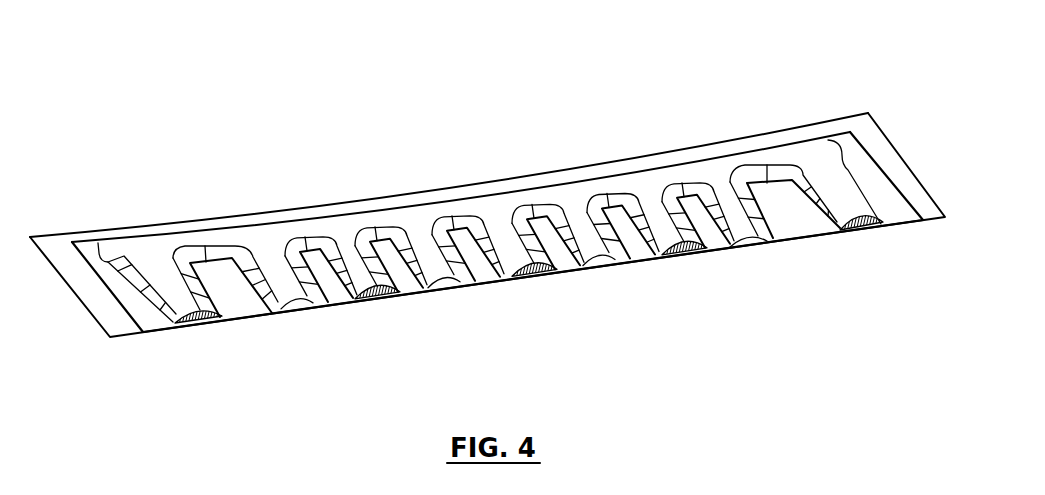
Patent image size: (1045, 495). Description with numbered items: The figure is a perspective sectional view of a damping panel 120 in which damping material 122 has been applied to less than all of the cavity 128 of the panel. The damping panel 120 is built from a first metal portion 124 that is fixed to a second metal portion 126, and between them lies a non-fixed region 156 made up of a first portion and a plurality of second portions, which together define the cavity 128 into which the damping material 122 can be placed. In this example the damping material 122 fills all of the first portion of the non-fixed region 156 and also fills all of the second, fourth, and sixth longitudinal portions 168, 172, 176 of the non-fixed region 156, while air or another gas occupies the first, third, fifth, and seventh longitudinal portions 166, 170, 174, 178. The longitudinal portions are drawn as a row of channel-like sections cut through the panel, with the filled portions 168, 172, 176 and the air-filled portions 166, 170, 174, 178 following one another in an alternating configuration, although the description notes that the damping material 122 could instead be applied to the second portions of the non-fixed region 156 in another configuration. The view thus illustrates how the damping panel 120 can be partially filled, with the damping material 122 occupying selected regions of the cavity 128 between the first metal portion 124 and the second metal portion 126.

The damping panel 120 is at (877, 79).
The damping material 122 is at (673, 258).
The first metal portion 124 is at (60, 252).
The second metal portion 126 is at (490, 225).
The cavity 128 is at (300, 303).
The non-fixed region 156 is at (265, 243).
The first longitudinal portion 166 is at (282, 270).
The second longitudinal portion 168 is at (362, 268).
The third longitudinal portion 170 is at (428, 252).
The fourth longitudinal portion 172 is at (517, 252).
The fifth longitudinal portion 174 is at (593, 245).
The sixth longitudinal portion 176 is at (698, 253).
The seventh longitudinal portion 178 is at (768, 243).